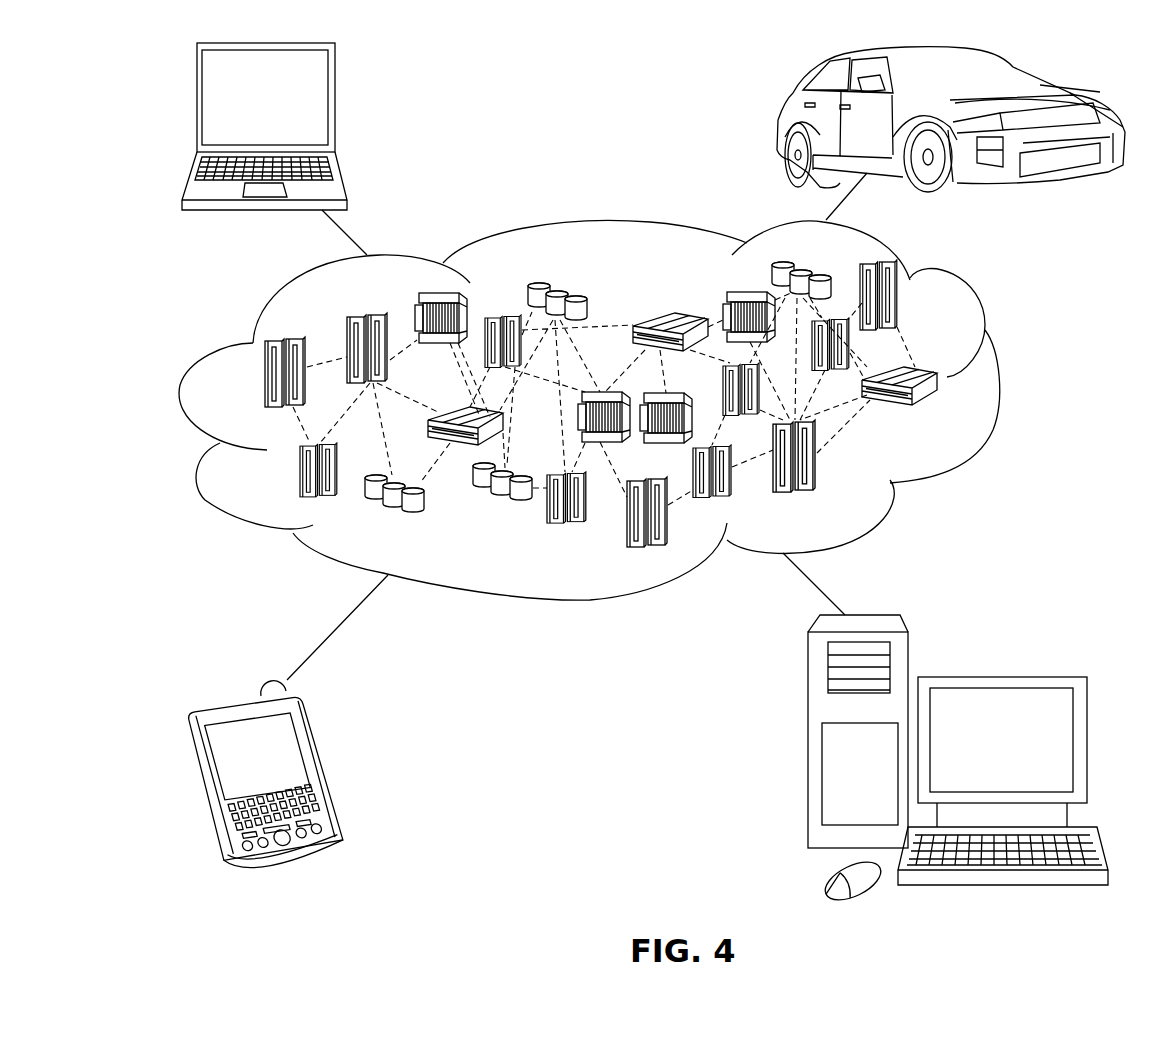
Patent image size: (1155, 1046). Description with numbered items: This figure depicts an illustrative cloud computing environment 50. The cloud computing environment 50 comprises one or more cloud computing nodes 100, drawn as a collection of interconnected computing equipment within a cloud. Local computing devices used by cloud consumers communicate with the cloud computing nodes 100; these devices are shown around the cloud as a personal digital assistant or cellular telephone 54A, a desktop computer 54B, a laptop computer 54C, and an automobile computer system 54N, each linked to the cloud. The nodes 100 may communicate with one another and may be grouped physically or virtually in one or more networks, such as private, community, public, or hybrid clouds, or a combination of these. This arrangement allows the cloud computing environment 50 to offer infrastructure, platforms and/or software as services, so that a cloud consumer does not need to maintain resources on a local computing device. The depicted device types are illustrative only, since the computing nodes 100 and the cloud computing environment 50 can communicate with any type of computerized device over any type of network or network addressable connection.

The cloud computing environment 50 is at (1000, 380).
The cloud computing nodes 100 is at (943, 413).
The personal digital assistant or cellular telephone 54A is at (323, 768).
The desktop computer 54B is at (1000, 675).
The laptop computer 54C is at (337, 107).
The automobile computer system 54N is at (778, 122).